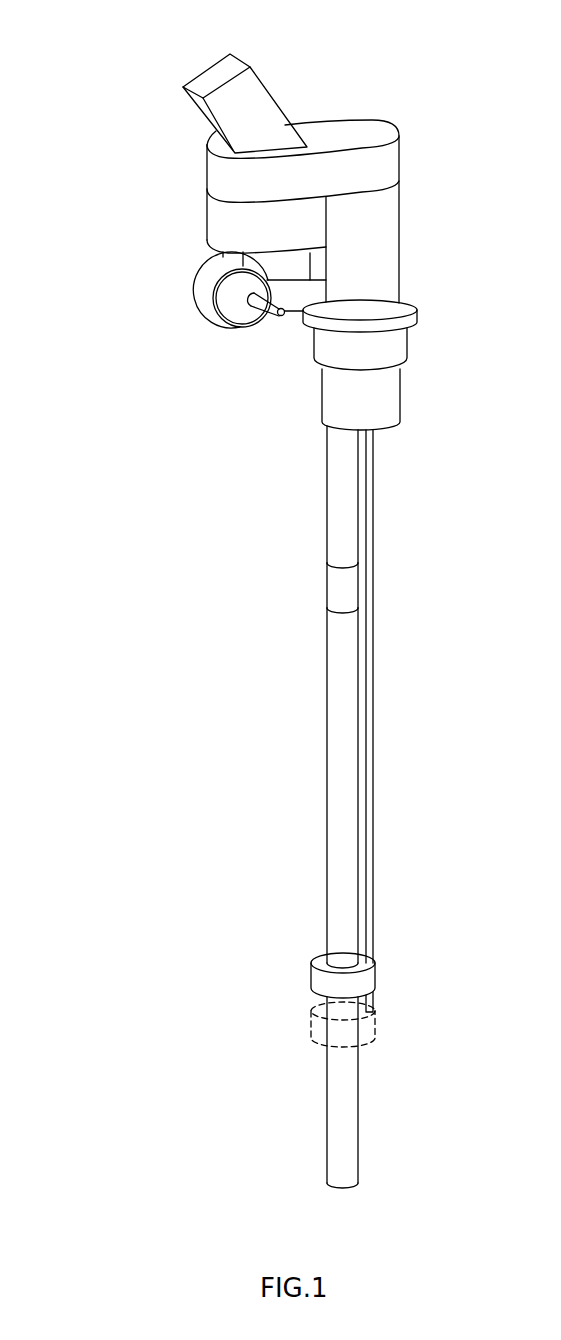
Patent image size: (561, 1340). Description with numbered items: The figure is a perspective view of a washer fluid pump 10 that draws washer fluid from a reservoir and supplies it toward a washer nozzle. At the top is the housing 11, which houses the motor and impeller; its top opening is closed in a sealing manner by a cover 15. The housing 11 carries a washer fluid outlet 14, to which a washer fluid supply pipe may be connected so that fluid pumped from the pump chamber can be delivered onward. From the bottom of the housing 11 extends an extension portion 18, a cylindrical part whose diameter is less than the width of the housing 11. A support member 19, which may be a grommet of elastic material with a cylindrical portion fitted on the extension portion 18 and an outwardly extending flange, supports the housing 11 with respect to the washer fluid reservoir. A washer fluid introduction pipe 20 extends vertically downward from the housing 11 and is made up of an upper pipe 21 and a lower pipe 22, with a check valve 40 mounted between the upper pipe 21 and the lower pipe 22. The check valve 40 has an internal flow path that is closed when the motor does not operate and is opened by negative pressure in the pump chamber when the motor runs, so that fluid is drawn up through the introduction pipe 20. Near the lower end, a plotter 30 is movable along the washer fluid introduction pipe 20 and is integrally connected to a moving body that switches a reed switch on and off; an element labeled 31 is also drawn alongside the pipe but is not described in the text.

The washer fluid pump 10 is at (76, 33).
The housing 11 is at (232, 228).
The washer fluid outlet 14 is at (208, 290).
The cover 15 is at (383, 171).
The extension portion 18 is at (383, 398).
The support member 19 is at (390, 347).
The washer fluid introduction pipe 20 is at (325, 807).
The upper pipe 21 is at (343, 547).
The lower pipe 22 is at (311, 898).
The plotter 30 is at (365, 982).
The rod 31 is at (372, 658).
The check valve 40 is at (347, 588).